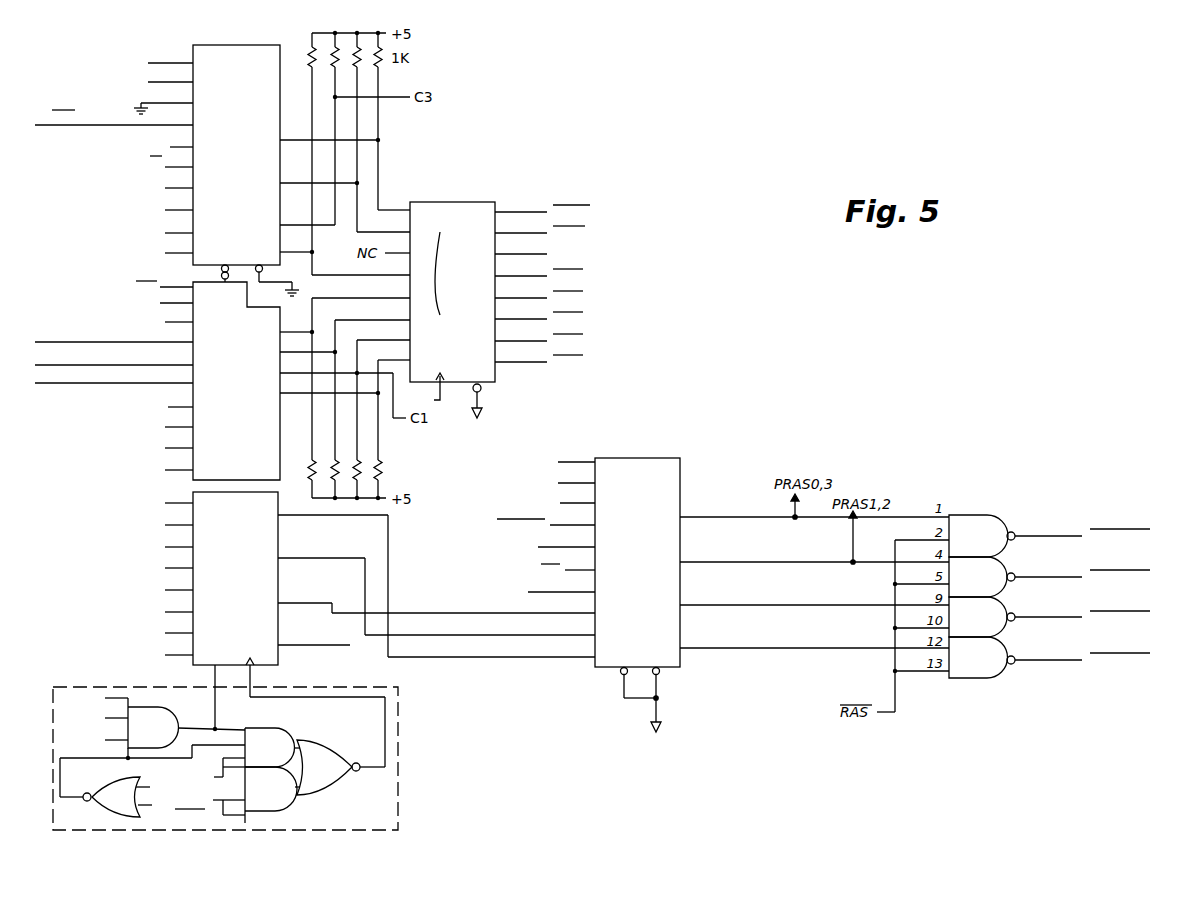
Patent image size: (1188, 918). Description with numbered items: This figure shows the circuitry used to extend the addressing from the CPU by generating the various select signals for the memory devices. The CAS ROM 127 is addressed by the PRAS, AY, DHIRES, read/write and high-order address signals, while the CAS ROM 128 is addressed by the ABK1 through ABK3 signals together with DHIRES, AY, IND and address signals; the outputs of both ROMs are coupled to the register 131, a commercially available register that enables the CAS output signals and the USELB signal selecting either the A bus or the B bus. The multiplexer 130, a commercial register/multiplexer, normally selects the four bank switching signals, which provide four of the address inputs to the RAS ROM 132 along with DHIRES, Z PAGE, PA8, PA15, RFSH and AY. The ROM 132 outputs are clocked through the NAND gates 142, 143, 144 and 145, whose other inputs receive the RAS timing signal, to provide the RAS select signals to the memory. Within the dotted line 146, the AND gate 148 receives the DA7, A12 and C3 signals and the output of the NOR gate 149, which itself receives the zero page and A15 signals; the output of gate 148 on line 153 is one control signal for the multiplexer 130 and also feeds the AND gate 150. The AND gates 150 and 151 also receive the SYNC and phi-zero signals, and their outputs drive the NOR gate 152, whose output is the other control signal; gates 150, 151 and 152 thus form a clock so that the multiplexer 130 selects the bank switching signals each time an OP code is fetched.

The CAS ROM 127 is at (206, 170).
The CAS ROM 128 is at (214, 377).
The multiplexer 130 is at (245, 589).
The register 131 is at (482, 370).
The RAS ROM 132 is at (680, 492).
The NAND gate 142 is at (980, 515).
The NAND gate 143 is at (990, 570).
The NAND gate 144 is at (995, 612).
The NAND gate 145 is at (992, 665).
The dotted line 146 is at (398, 768).
The AND gate 148 is at (160, 709).
The NOR gate 149 is at (107, 790).
The AND gate 150 is at (270, 730).
The AND gate 151 is at (283, 800).
The NOR gate 152 is at (323, 757).
The line 153 is at (216, 705).